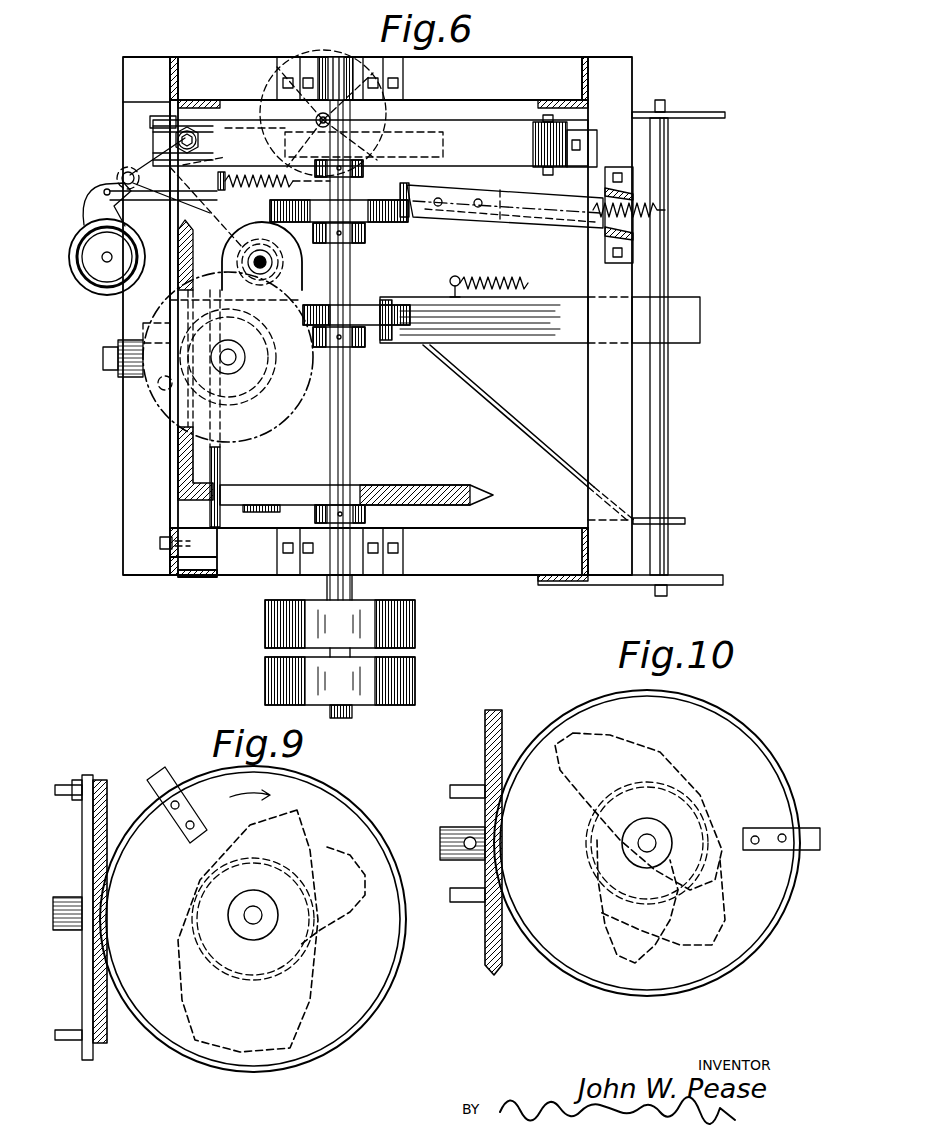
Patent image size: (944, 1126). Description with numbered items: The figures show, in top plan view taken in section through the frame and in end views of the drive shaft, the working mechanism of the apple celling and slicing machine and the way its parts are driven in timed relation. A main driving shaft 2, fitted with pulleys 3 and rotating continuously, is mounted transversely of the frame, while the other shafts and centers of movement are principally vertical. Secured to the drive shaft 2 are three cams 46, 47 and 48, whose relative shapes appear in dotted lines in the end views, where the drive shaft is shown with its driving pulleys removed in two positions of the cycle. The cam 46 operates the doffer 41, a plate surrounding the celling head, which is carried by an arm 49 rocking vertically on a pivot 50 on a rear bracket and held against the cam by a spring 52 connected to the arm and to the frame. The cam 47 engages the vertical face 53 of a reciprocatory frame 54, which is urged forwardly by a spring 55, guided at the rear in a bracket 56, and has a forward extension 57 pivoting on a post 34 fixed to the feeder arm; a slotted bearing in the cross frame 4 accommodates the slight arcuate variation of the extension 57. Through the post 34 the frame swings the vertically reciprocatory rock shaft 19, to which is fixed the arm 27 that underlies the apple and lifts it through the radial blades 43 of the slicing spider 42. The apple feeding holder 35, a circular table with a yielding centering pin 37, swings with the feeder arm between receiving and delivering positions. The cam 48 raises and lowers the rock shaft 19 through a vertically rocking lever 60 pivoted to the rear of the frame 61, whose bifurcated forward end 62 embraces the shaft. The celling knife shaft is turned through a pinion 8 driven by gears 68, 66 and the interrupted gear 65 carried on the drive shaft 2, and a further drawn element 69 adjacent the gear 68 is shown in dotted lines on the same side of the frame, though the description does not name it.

In FIG. 6, the main driving shaft 2 is at (352, 272).
In FIG. 9, the main driving shaft 2 is at (253, 915).
In FIG. 10, the main driving shaft 2 is at (647, 843).
In FIG. 6, the pulleys 3 is at (410, 630).
In FIG. 6, the cross frame 4 is at (220, 470).
In FIG. 6, the pinion 8 is at (284, 262).
In FIG. 6, the rock shaft 19 is at (203, 140).
In FIG. 6, the arm 27 is at (232, 218).
In FIG. 6, the post 34 is at (118, 182).
In FIG. 6, the apple feeding holder 35 is at (100, 282).
In FIG. 6, the centering pin 37 is at (112, 252).
In FIG. 6, the doffer 41 is at (302, 252).
In FIG. 6, the slicing spider 42 is at (333, 57).
In FIG. 6, the radial blades 43 is at (270, 92).
In FIG. 6, the cam 46 is at (390, 303).
In FIG. 9, the cam 46 is at (327, 852).
In FIG. 10, the cam 46 is at (718, 915).
In FIG. 6, the cam 47 is at (382, 224).
In FIG. 9, the cam 47 is at (312, 992).
In FIG. 10, the cam 47 is at (698, 800).
In FIG. 6, the cam 48 is at (455, 131).
In FIG. 9, the cam 48 is at (352, 897).
In FIG. 10, the cam 48 is at (600, 915).
In FIG. 6, the arm 49 is at (556, 345).
In FIG. 6, the pivot 50 is at (668, 372).
In FIG. 6, the spring 52 is at (530, 285).
In FIG. 6, the vertical face 53 is at (438, 207).
In FIG. 6, the reciprocatory frame 54 is at (514, 220).
In FIG. 6, the spring 55 is at (605, 213).
In FIG. 6, the bracket 56 is at (635, 248).
In FIG. 6, the forward extension 57 is at (126, 175).
In FIG. 6, the vertically rocking lever 60 is at (370, 143).
In FIG. 6, the frame 61 is at (548, 170).
In FIG. 6, the bifurcated forward end 62 is at (163, 121).
In FIG. 6, the interrupted gear 65 is at (250, 487).
In FIG. 9, the interrupted gear 65 is at (140, 815).
In FIG. 10, the interrupted gear 65 is at (765, 745).
In FIG. 6, the gear 66 is at (178, 450).
In FIG. 9, the gear 66 is at (100, 790).
In FIG. 10, the gear 66 is at (505, 722).
In FIG. 6, the gear 68 is at (295, 425).
In FIG. 6, the cam disk 69 is at (258, 390).